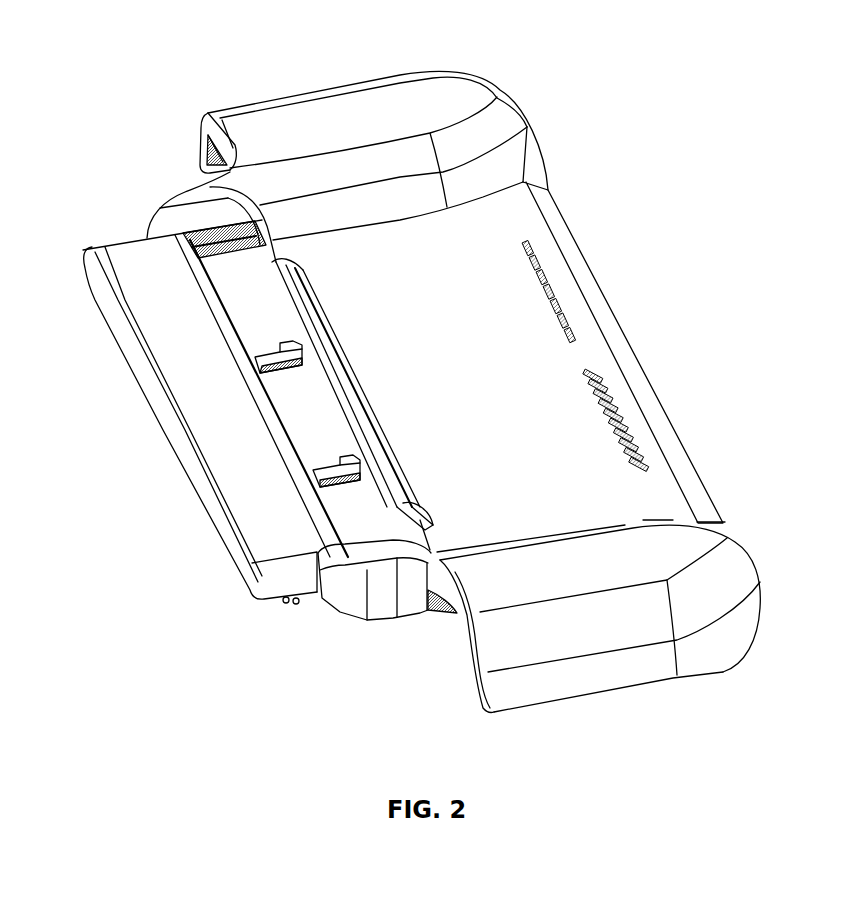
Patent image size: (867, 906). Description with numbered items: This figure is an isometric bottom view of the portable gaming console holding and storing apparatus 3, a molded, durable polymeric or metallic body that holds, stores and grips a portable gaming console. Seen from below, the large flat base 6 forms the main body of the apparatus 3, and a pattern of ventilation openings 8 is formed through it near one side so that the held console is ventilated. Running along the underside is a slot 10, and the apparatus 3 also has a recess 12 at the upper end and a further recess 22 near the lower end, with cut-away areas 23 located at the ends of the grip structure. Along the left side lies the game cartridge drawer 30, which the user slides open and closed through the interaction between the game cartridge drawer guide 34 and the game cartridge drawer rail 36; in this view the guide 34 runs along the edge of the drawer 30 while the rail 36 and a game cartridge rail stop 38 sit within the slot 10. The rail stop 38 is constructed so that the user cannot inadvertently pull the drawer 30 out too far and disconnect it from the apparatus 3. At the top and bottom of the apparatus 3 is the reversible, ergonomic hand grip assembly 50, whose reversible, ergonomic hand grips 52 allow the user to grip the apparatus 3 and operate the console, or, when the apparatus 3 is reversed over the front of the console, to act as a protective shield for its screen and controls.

The portable gaming console holding and storing apparatus 3 is at (695, 315).
The base 6 is at (445, 334).
The ventilation openings 8 is at (600, 410).
The slot 10 is at (445, 487).
The recess 12 is at (172, 160).
The recess 22 is at (416, 644).
The cut-away areas 23 is at (164, 134).
The game cartridge drawer 30 is at (247, 548).
The game cartridge drawer guide 34 is at (200, 500).
The game cartridge drawer rail 36 is at (255, 355).
The game cartridge rail stop 38 is at (355, 460).
The reversible, ergonomic hand grip assembly 50 is at (588, 99).
The reversible, ergonomic hand grips 52 is at (372, 117).